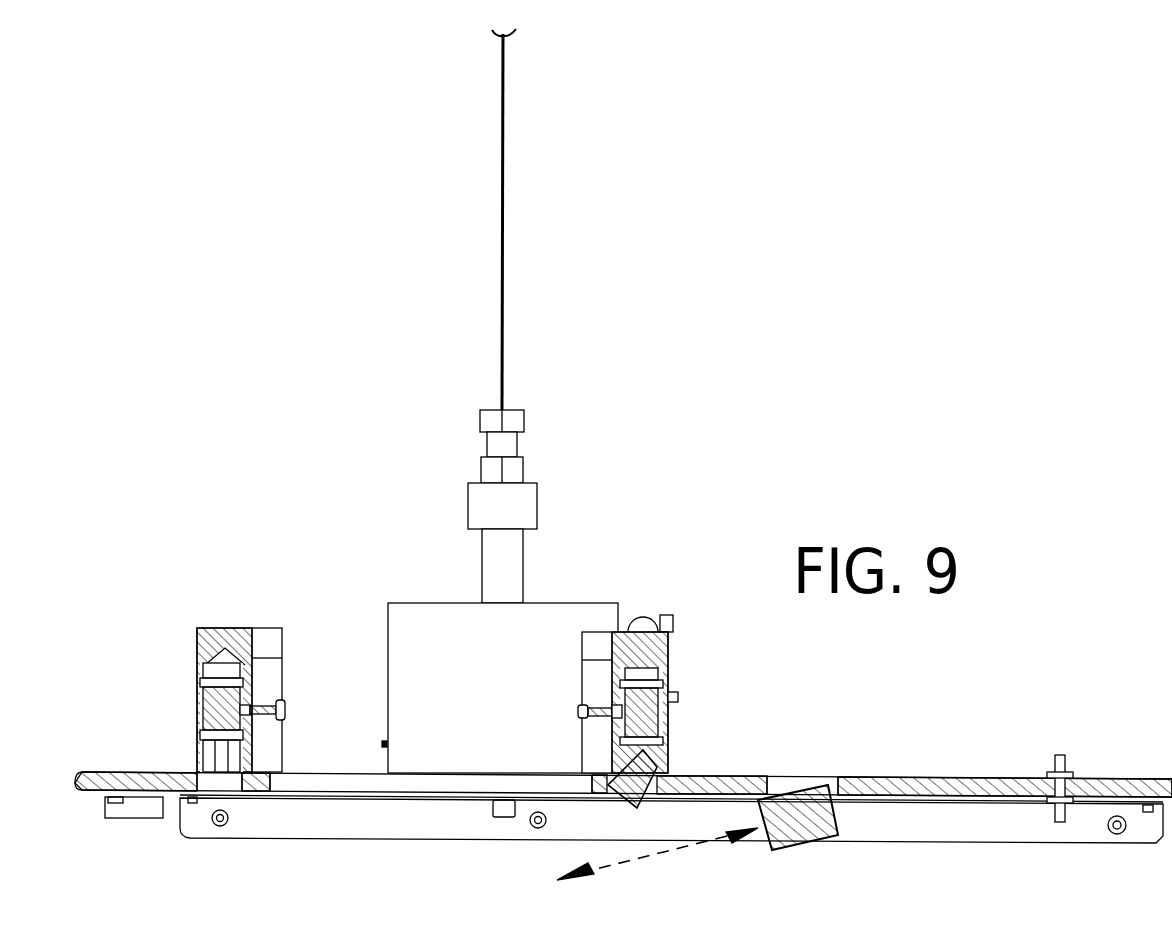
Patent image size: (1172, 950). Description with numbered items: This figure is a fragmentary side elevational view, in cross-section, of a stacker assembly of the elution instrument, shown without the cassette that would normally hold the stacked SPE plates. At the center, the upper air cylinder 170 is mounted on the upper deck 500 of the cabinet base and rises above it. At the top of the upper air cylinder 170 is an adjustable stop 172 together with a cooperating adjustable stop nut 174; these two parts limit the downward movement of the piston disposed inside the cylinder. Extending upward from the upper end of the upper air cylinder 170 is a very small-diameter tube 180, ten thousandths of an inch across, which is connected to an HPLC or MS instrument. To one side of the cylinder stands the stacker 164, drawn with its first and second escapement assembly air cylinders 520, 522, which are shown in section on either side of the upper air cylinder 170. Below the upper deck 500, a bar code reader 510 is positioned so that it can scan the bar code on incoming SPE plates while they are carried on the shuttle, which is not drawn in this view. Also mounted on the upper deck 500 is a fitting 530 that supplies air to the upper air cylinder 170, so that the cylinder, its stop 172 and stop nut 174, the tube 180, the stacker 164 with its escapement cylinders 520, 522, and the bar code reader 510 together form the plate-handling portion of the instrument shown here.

The second stacker assembly 164 is at (201, 666).
The upper air cylinder 170 is at (542, 625).
The adjustable stop 172 is at (520, 510).
The adjustable stop nut 174 is at (515, 470).
The tube 180 is at (505, 298).
The upper deck 500 is at (957, 787).
The bar code reader 510 is at (797, 828).
The first escapement assembly air cylinder 520 is at (208, 712).
The second escapement assembly air cylinder 522 is at (660, 717).
The fitting 530 is at (1065, 765).